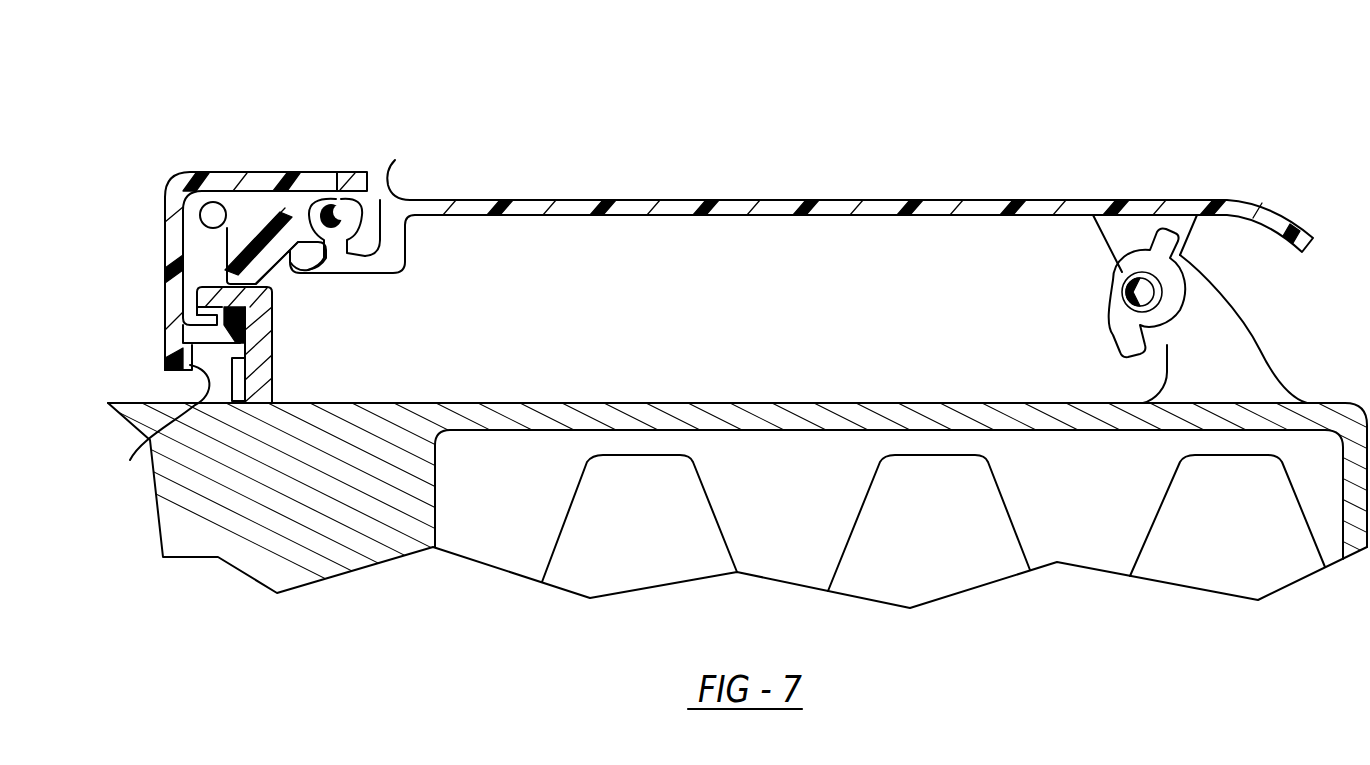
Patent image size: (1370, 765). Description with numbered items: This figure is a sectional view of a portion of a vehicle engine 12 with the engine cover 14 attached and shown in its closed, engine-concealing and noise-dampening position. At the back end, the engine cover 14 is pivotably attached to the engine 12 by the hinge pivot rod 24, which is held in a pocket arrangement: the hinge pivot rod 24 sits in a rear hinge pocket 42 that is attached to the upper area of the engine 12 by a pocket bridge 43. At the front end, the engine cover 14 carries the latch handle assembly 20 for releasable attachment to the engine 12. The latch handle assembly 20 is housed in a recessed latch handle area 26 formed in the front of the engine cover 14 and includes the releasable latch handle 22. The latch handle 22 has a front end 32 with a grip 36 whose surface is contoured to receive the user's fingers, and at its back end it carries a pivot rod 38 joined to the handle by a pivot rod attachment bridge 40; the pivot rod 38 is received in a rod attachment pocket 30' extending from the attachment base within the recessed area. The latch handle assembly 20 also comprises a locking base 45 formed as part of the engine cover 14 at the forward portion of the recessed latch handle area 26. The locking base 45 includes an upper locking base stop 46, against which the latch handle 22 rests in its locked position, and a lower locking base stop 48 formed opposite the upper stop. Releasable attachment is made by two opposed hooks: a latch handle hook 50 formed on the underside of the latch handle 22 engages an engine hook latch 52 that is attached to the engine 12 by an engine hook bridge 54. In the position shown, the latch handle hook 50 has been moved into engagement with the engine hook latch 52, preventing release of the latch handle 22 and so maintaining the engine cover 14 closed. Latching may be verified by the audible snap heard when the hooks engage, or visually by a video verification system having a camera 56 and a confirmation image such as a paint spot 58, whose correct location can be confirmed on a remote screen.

The engine 12 is at (383, 523).
The engine cover 14 is at (627, 199).
The latch handle assembly 20 is at (260, 183).
The latch handle 22 is at (173, 240).
The hinge pivot rod 24 is at (1143, 293).
The recessed latch handle area 26 is at (403, 210).
The rod attachment pocket 30' is at (427, 187).
The front end 32 is at (170, 297).
The grip 36 is at (172, 350).
The pivot rod 38 is at (357, 210).
The pivot rod attachment bridge 40 is at (340, 208).
The rear hinge pocket 42 is at (1178, 290).
The pocket bridge 43 is at (1243, 352).
The locking base 45 is at (236, 243).
The upper locking base stop 46 is at (238, 190).
The lower locking base stop 48 is at (177, 218).
The latch handle hook 50 is at (243, 313).
The engine hook latch 52 is at (240, 297).
The engine hook bridge 54 is at (255, 396).
The camera 56 is at (240, 375).
The paint spot 58 is at (163, 429).